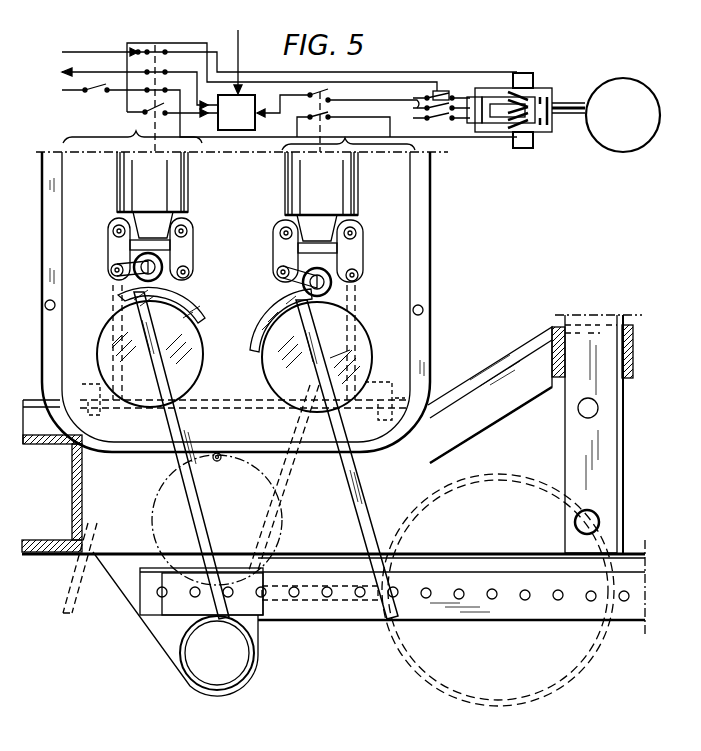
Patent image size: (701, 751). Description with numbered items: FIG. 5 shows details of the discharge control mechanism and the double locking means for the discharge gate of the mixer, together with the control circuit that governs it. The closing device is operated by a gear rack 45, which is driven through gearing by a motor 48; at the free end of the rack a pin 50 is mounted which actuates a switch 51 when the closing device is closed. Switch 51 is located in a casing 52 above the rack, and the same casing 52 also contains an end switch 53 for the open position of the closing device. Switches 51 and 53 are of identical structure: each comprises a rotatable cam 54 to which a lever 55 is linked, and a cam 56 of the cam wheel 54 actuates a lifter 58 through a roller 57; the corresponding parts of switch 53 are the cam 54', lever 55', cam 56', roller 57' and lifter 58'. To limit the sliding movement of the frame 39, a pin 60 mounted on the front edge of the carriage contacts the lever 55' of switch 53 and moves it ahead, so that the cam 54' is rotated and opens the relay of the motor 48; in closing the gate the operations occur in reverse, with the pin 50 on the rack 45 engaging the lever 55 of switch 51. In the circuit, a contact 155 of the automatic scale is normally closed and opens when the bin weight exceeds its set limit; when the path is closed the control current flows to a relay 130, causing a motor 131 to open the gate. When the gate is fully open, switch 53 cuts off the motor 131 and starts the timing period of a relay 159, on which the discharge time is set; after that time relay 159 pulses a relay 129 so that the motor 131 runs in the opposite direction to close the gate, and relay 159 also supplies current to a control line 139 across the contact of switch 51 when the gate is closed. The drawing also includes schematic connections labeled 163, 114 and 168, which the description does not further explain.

The control line 163 is at (72, 50).
The control line 139 is at (72, 70).
The contact 155 is at (95, 88).
The signal line / switch 114 is at (342, 103).
The relay 159 is at (236, 112).
The switch 51 is at (132, 131).
The end switch 53 is at (348, 137).
The resistor / contact set 168 is at (456, 90).
The relay 129 is at (536, 74).
The relay 130 is at (510, 146).
The motor 131 is at (623, 130).
The motor 48 is at (616, 152).
The casing 52 is at (72, 226).
The lifter 58 is at (166, 216).
The roller 57 is at (176, 275).
The cam 56 is at (173, 314).
The rotatable cam 54 is at (164, 354).
The lever 55 is at (171, 452).
The lifter 58' is at (334, 220).
The roller 57' is at (349, 282).
The cam 56' is at (276, 320).
The cam 54' is at (329, 357).
The lever 55' is at (323, 452).
The pin 50 is at (170, 610).
The pin 60 is at (288, 604).
The gear rack 45 is at (353, 607).
The frame 39 is at (388, 662).